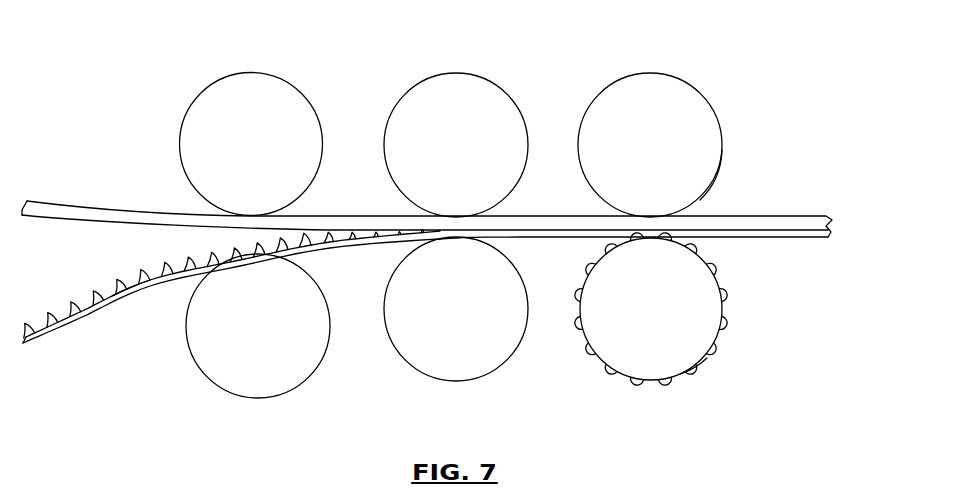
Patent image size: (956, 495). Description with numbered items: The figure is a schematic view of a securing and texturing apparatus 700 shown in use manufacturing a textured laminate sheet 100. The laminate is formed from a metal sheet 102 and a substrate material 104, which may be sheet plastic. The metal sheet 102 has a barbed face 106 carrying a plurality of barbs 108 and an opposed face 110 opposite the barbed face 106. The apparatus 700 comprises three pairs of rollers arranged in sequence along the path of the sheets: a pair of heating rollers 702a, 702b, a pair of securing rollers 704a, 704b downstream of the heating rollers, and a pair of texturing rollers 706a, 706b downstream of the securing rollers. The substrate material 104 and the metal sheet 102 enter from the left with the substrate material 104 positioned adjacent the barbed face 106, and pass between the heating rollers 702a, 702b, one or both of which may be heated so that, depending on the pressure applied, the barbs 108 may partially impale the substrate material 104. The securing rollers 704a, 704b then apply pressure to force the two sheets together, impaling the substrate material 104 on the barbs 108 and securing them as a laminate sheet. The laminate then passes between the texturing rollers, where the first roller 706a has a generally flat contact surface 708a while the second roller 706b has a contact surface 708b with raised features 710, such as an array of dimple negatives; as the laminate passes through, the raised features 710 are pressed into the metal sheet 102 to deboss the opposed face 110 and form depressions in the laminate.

The securing and texturing apparatus 700 is at (757, 86).
The textured laminate sheet 100 is at (784, 212).
The metal sheet 102 is at (68, 323).
The substrate material 104 is at (107, 220).
The barbed face 106 is at (88, 293).
The barbs 108 is at (116, 283).
The opposed face 110 is at (130, 294).
The heating roller 702a is at (276, 88).
The heating roller 702b is at (288, 372).
The securing roller 704a is at (474, 88).
The securing roller 704b is at (475, 360).
The first roller 706a is at (662, 95).
The second roller 706b is at (692, 283).
The contact surface 708a is at (722, 150).
The contact surface 708b is at (707, 358).
The raised features 710 is at (727, 297).